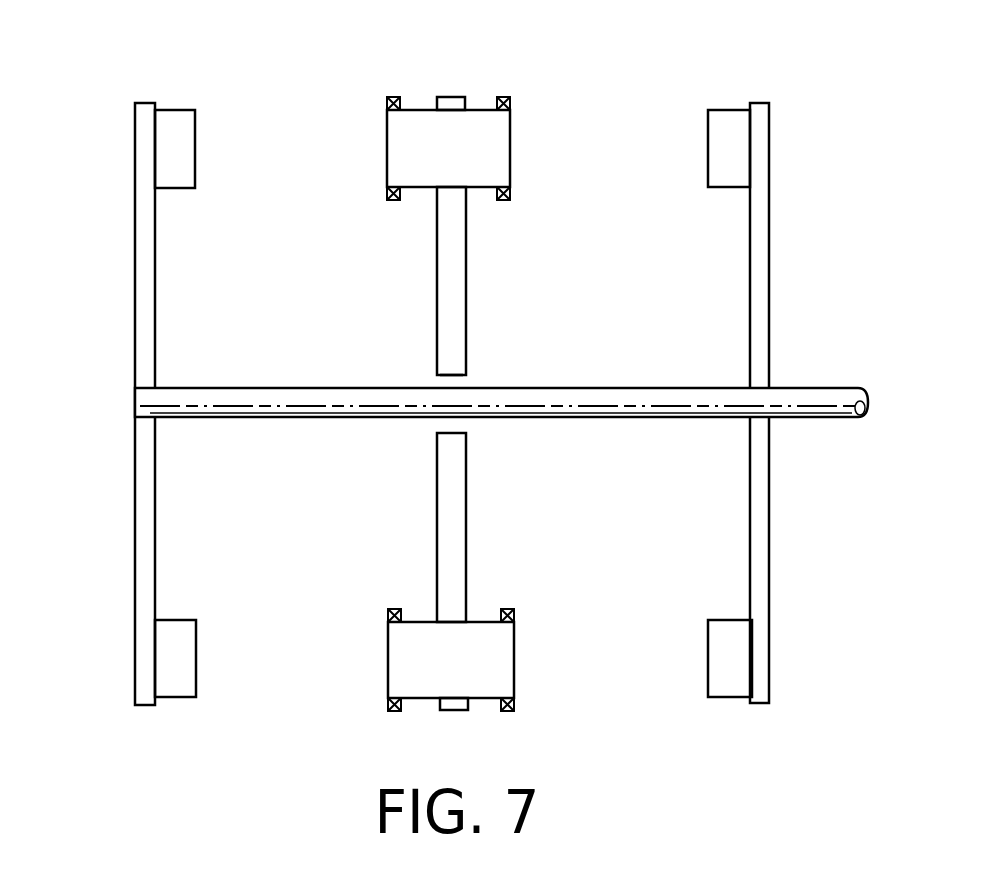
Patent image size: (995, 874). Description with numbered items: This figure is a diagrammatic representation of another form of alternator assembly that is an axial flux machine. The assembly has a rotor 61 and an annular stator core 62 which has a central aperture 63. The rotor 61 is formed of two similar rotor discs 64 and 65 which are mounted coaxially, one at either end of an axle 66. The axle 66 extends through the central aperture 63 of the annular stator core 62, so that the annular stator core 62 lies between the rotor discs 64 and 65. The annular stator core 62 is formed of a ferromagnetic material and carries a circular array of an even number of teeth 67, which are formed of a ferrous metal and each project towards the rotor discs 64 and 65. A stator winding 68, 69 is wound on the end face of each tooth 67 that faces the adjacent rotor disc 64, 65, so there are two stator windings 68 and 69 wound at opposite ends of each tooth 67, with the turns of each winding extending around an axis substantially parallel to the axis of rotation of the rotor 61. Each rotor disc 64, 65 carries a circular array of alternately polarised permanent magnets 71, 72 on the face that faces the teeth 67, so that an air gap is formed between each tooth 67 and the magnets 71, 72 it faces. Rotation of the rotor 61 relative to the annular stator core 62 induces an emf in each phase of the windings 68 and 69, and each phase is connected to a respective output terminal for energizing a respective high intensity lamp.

The rotor 61 is at (130, 133).
The annular stator core 62 is at (436, 250).
The central aperture 63 is at (461, 378).
The rotor disc 64 is at (134, 248).
The rotor disc 65 is at (770, 250).
The axle 66 is at (828, 387).
The teeth 67 is at (477, 109).
The stator winding 68 is at (386, 102).
The stator winding 69 is at (512, 102).
The permanent magnets 71 is at (172, 109).
The permanent magnets 72 is at (723, 109).